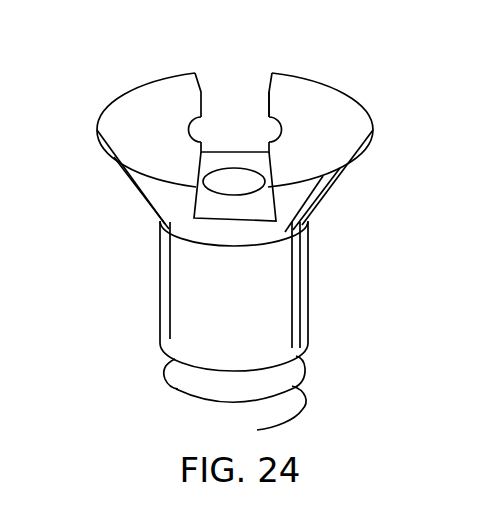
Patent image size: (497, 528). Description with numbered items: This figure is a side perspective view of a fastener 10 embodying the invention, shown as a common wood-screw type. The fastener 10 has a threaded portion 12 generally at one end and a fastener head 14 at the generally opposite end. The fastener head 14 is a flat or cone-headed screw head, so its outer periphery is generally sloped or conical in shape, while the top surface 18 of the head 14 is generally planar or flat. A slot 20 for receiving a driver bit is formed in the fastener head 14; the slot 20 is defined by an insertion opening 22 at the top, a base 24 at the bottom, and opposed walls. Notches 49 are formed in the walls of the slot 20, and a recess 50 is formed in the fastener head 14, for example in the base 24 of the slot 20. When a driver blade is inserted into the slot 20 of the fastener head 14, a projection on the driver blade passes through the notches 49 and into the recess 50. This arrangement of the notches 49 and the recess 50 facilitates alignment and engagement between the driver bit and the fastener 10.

The fastener 10 is at (336, 260).
The threaded portion 12 is at (178, 385).
The fastener head 14 is at (118, 196).
The top surface 18 is at (123, 128).
The slot 20 is at (232, 135).
The insertion opening 22 is at (237, 93).
The base 24 is at (205, 208).
The notches 49 is at (192, 127).
The recess 50 is at (234, 188).